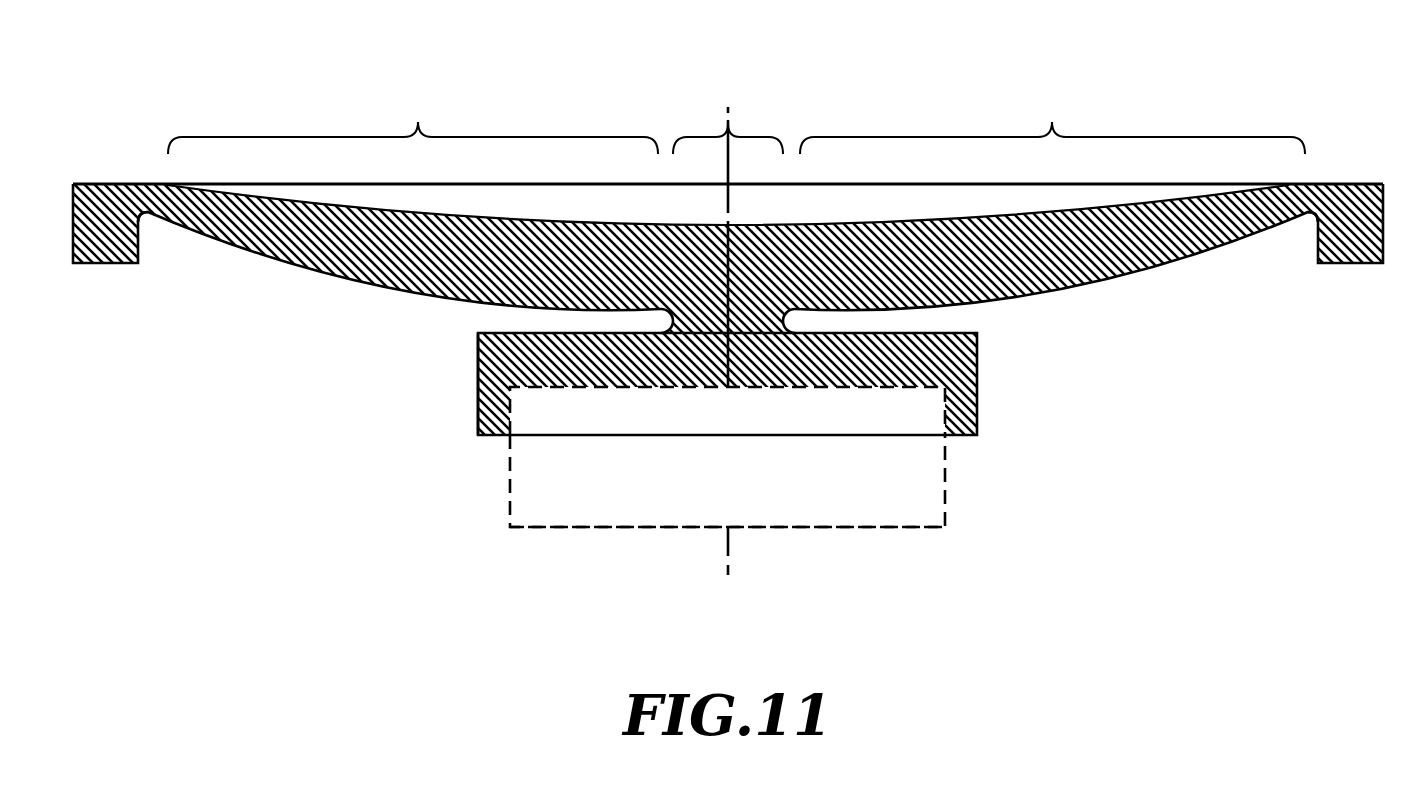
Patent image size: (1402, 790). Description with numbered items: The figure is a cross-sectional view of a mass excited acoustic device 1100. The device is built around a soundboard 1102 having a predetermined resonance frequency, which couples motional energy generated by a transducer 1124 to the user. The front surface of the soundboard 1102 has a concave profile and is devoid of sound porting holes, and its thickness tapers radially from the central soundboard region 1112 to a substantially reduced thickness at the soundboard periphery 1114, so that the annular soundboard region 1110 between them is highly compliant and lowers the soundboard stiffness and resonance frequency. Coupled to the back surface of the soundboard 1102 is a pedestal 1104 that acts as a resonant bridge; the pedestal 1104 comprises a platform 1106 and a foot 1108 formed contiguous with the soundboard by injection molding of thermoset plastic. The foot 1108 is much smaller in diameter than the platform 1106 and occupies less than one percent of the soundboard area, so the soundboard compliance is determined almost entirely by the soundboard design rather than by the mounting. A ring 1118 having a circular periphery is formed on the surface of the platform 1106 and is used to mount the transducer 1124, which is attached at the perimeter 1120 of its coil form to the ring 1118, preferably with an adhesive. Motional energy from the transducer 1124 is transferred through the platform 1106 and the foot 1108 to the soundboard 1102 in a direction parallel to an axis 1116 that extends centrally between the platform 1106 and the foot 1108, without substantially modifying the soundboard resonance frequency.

The mass excited acoustic device 1100 is at (354, 510).
The soundboard 1102 is at (1185, 243).
The pedestal 1104 is at (978, 362).
The platform 1106 is at (565, 389).
The foot 1108 is at (668, 312).
The annular soundboard region 1110 is at (736, 122).
The central soundboard region 1112 is at (731, 229).
The soundboard periphery 1114 is at (145, 214).
The axis 1116 is at (728, 552).
The ring 1118 is at (978, 420).
The perimeter 1120 is at (508, 435).
The transducer 1124 is at (535, 528).